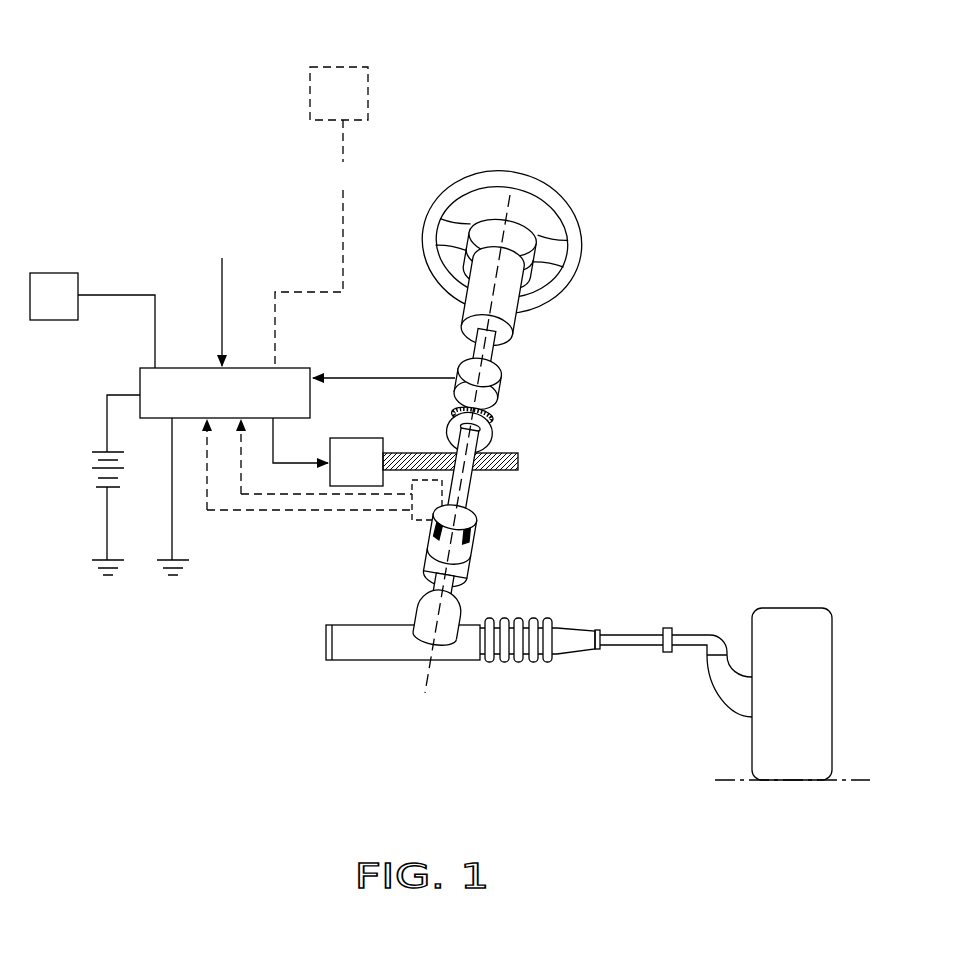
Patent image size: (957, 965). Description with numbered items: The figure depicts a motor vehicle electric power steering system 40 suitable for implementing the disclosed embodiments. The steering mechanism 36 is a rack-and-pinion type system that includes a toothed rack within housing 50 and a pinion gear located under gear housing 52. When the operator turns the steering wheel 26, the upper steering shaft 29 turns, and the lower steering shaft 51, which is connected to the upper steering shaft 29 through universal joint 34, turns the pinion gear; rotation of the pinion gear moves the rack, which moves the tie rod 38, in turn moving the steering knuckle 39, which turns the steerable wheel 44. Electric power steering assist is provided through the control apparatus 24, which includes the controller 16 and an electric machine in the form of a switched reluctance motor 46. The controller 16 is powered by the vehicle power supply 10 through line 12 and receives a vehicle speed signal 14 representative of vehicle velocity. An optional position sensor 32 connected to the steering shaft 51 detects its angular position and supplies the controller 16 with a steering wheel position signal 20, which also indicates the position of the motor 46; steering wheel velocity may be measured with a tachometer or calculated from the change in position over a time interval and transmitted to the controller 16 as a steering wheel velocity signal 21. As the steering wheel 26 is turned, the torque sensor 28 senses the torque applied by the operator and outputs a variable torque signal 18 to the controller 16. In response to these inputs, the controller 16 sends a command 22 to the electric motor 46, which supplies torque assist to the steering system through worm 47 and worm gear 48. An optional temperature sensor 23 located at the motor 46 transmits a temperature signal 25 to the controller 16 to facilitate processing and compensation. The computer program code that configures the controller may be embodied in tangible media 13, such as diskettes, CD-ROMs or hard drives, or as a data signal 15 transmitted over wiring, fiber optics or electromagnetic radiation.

The vehicle power supply 10 is at (95, 472).
The line 12 is at (125, 394).
The tangible media 13 is at (60, 272).
The vehicle speed signal 14 is at (226, 335).
The data signal 15 is at (133, 293).
The controller 16 is at (197, 366).
The torque signal 18 is at (400, 378).
The steering wheel position signal 20 is at (302, 513).
The steering wheel velocity signal 21 is at (270, 497).
The command 22 is at (293, 462).
The temperature sensor 23 is at (348, 64).
The control apparatus 24 is at (663, 354).
The temperature signal 25 is at (346, 143).
The steering wheel 26 is at (548, 195).
The torque sensor 28 is at (497, 380).
The upper steering shaft 29 is at (489, 335).
The position sensor 32 is at (412, 510).
The universal joint 34 is at (484, 530).
The steering mechanism 36 is at (543, 616).
The tie rod 38 is at (628, 640).
The steering knuckle 39 is at (725, 690).
The electric power steering system 40 is at (753, 447).
The steerable wheel 44 is at (810, 615).
The electric motor 46 is at (370, 438).
The worm 47 is at (520, 453).
The worm gear 48 is at (488, 420).
The housing 50 is at (343, 648).
The lower steering shaft 51 is at (455, 585).
The gear housing 52 is at (420, 610).